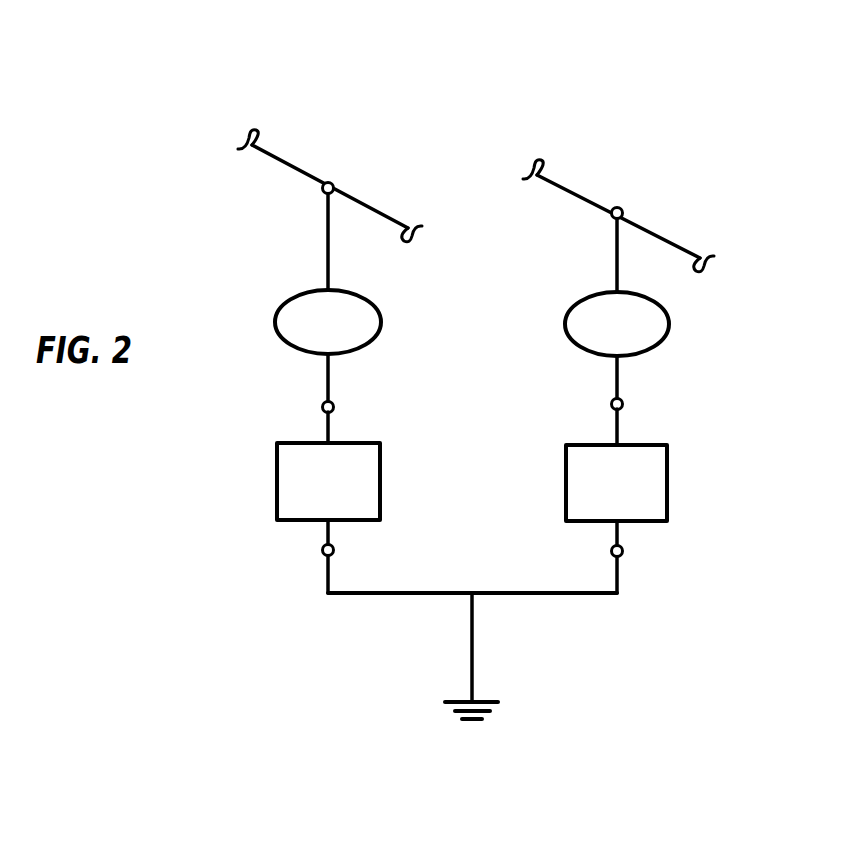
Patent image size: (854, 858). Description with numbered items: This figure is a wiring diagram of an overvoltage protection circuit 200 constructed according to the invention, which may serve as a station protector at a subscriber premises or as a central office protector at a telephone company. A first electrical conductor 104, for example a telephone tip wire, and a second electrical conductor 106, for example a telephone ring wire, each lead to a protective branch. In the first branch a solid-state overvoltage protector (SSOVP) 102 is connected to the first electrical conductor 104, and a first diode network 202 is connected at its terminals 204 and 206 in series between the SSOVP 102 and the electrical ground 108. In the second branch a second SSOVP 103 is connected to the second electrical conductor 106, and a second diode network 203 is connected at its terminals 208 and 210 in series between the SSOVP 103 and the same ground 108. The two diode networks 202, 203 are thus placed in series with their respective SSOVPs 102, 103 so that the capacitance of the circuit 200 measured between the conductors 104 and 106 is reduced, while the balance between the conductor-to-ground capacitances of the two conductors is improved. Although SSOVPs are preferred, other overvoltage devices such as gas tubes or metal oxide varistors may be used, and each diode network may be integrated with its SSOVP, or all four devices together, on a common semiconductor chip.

The overvoltage protection circuit 200 is at (656, 72).
The first electrical conductor 104 is at (270, 153).
The second electrical conductor 106 is at (560, 185).
The solid-state overvoltage protector 102 is at (277, 322).
The second SSOVP 103 is at (669, 325).
The terminal 204 is at (322, 407).
The terminal 208 is at (623, 404).
The first diode network 202 is at (277, 481).
The second diode network 203 is at (667, 471).
The terminal 206 is at (322, 552).
The terminal 210 is at (623, 553).
The electrical ground 108 is at (498, 702).